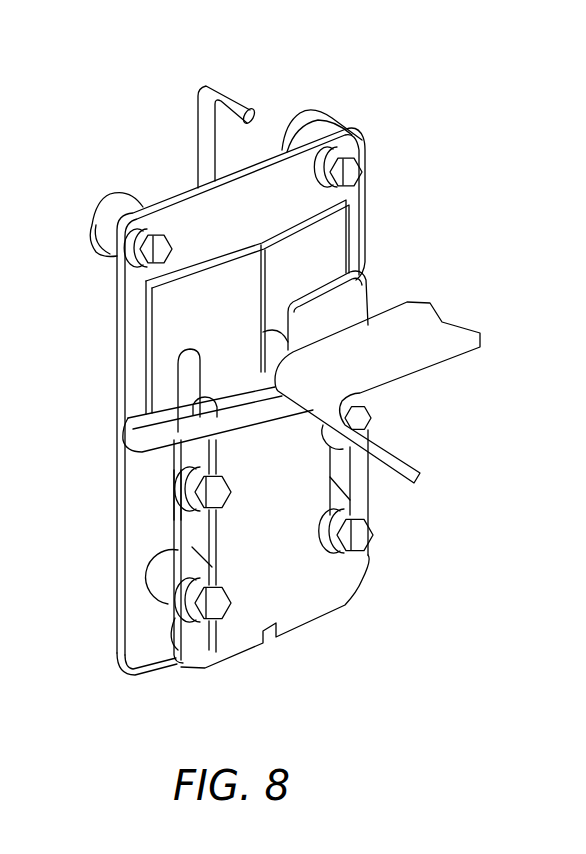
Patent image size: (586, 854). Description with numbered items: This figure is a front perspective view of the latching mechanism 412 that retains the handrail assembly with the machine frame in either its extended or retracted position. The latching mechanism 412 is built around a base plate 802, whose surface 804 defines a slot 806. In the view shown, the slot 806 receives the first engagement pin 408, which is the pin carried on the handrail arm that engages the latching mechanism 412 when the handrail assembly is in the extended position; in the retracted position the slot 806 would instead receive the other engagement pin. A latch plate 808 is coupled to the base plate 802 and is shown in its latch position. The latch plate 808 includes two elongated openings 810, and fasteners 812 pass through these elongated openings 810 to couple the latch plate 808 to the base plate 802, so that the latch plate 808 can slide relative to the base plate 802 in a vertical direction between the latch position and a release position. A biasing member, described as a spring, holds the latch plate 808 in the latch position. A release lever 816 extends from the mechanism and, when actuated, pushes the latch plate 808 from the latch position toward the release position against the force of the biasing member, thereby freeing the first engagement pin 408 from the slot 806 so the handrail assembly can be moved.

The latching mechanism 412 is at (527, 88).
The first engagement pin 408 is at (298, 340).
The base plate 802 is at (427, 203).
The surface 804 is at (352, 191).
The slot 806 is at (264, 323).
The latch plate 808 is at (420, 582).
The elongated openings 810 is at (190, 533).
The fasteners 812 is at (177, 512).
The release lever 816 is at (227, 103).